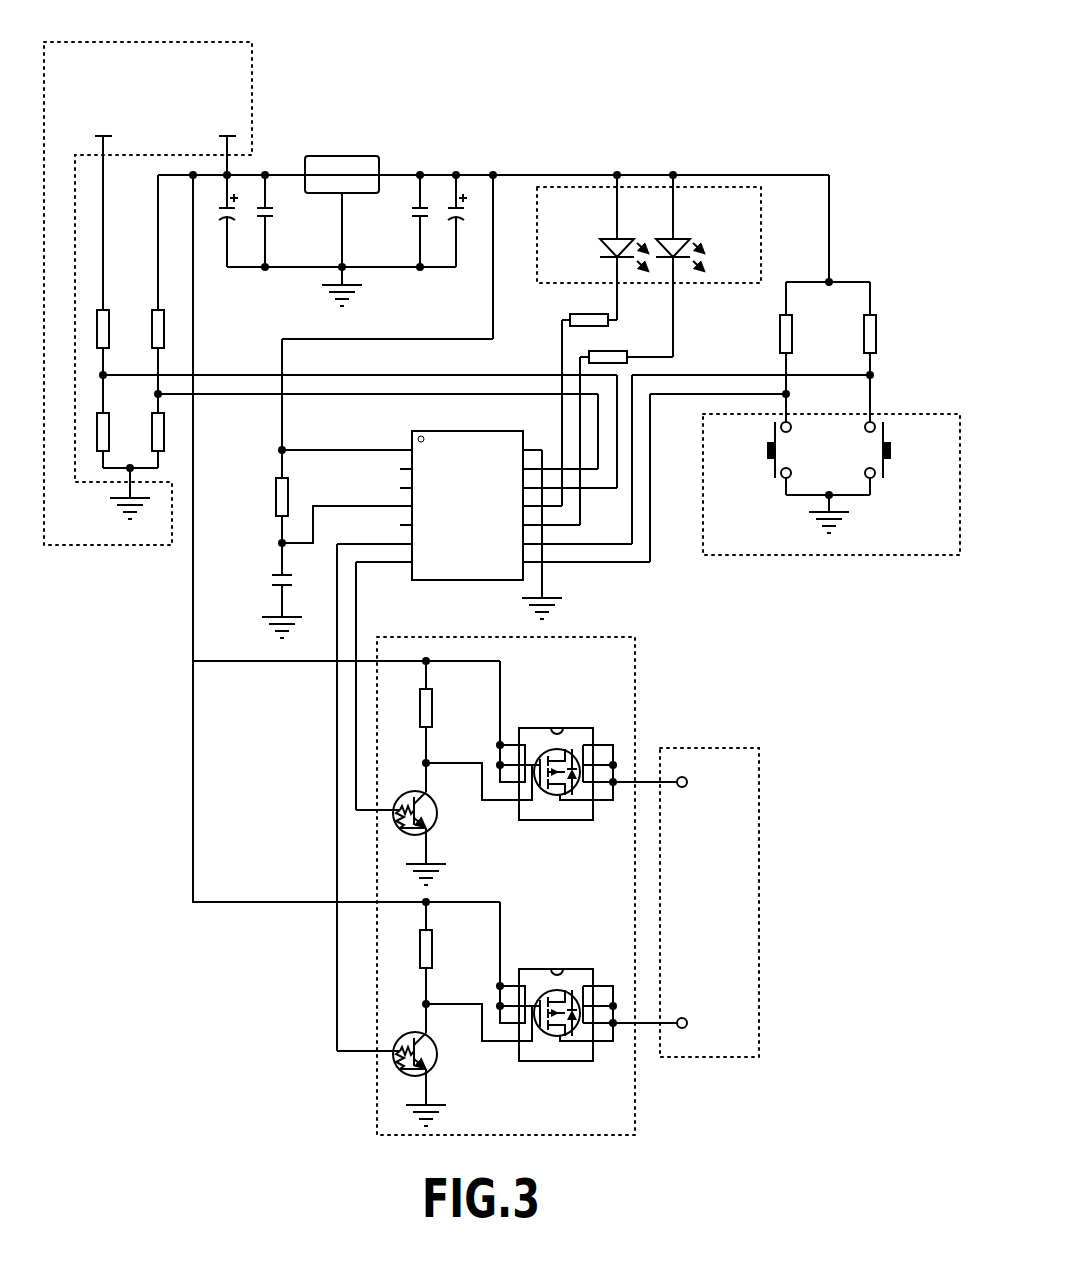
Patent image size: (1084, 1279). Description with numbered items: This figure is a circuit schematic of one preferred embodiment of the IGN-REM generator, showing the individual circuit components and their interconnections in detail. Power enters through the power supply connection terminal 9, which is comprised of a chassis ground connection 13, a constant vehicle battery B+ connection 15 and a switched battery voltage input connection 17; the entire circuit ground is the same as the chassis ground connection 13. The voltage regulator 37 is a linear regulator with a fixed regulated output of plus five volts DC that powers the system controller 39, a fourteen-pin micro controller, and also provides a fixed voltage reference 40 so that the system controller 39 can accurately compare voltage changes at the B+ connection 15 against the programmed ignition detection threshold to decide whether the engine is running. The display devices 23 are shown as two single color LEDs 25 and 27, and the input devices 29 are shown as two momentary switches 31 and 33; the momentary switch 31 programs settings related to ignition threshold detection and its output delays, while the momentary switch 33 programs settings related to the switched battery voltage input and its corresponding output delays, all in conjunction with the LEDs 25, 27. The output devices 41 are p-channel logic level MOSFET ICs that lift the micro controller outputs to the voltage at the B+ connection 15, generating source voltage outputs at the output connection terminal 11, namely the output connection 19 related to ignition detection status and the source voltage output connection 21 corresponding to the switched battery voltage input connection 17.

The power supply connection terminal 9 is at (150, 42).
The output connection terminal 11 is at (708, 748).
The chassis ground connection 13 is at (114, 516).
The constant vehicle battery B+ connection 15 is at (227, 106).
The switched battery voltage input connection 17 is at (103, 106).
The output connection 19 is at (686, 796).
The source voltage output connection 21 is at (688, 1012).
The display devices 23 is at (645, 186).
The single color LED 25 is at (607, 230).
The single color LED 27 is at (680, 230).
The input devices 29 is at (832, 558).
The momentary switch 31 is at (771, 494).
The momentary switch 33 is at (885, 492).
The voltage regulator 37 is at (342, 152).
The system controller 39 is at (456, 431).
The fixed voltage reference (VREF) 40 is at (392, 500).
The output devices 41 is at (634, 658).